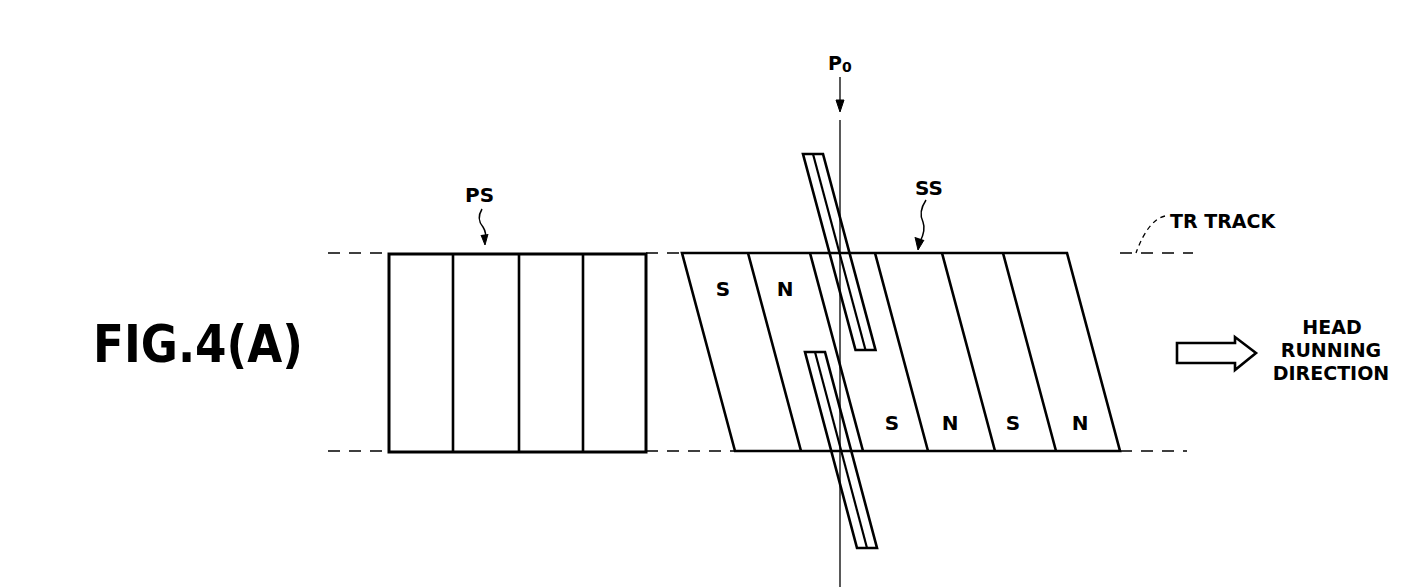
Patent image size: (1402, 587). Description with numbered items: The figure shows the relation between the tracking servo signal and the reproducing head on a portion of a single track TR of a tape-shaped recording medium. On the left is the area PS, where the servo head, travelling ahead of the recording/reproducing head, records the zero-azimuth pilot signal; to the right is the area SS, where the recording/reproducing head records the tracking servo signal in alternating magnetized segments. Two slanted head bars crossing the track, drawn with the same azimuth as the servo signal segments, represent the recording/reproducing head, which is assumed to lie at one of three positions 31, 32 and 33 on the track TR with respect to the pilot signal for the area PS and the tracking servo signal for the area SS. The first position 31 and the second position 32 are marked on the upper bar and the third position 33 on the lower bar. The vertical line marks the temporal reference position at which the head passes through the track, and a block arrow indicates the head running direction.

The first head position 31 is at (814, 150).
The second head position 32 is at (816, 251).
The third head position 33 is at (877, 539).